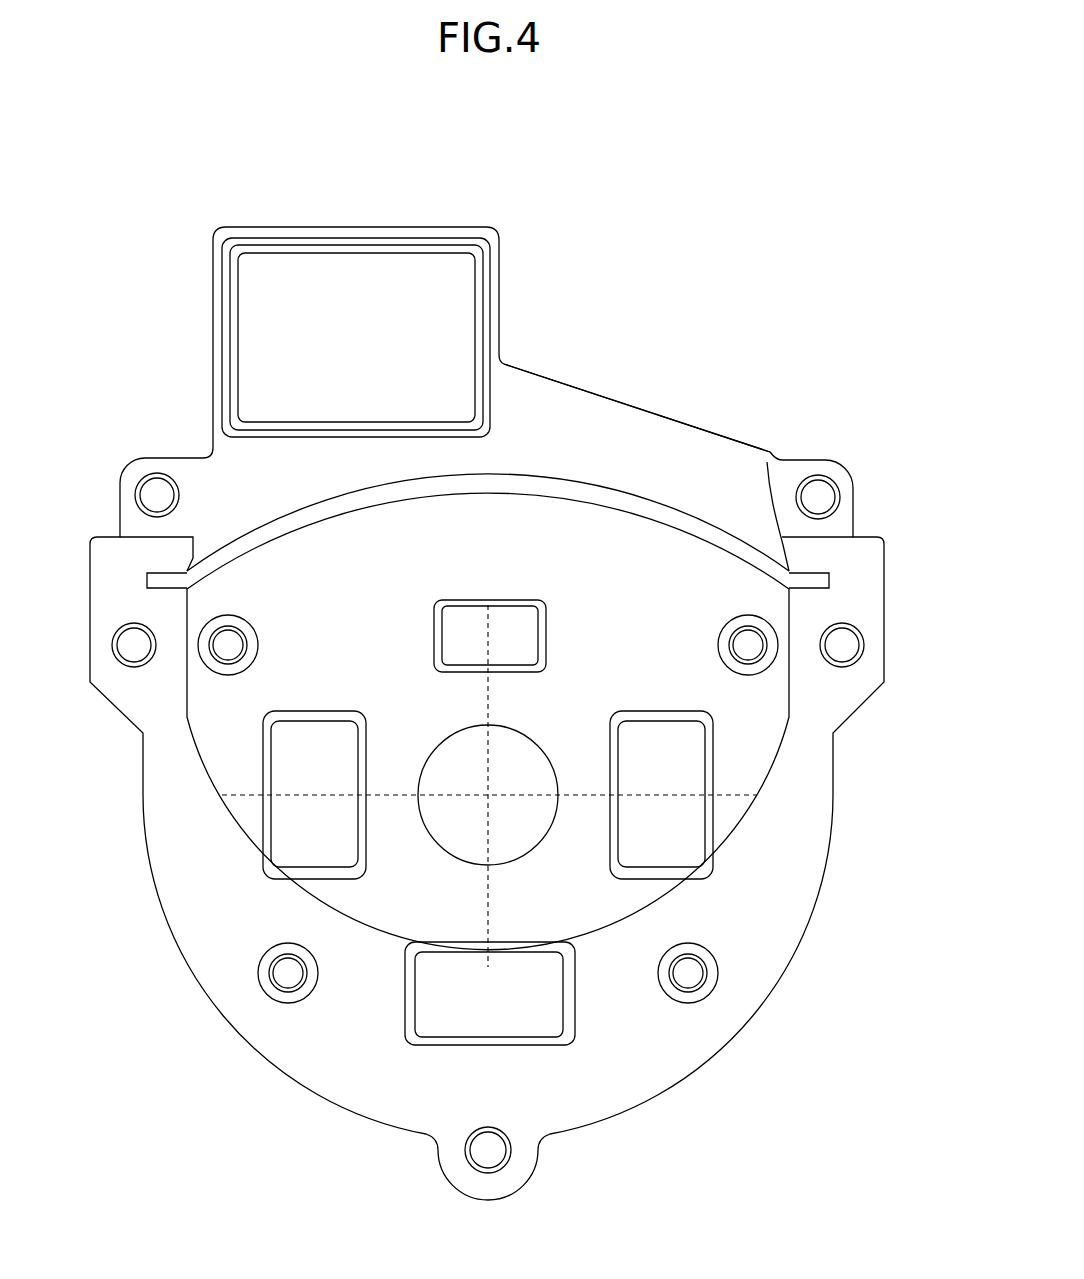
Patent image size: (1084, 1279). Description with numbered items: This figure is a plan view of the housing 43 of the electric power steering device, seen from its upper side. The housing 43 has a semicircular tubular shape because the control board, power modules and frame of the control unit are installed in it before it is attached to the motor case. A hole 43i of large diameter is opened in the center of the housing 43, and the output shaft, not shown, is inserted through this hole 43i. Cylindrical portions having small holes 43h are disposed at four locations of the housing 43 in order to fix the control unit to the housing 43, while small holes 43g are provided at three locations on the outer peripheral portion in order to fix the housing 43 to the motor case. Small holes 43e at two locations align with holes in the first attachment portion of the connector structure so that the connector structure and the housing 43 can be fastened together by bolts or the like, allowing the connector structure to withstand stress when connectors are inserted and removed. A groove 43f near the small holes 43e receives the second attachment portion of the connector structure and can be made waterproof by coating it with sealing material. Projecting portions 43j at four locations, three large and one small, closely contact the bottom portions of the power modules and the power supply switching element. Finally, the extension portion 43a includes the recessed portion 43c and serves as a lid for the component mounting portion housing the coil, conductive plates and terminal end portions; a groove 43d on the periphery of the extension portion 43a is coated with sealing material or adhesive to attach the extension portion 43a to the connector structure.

The housing 43 is at (762, 1008).
The extension portion 43a is at (500, 362).
The recessed portion 43c is at (248, 360).
The groove 43d is at (330, 237).
The small holes 43e is at (828, 477).
The groove 43f is at (805, 572).
The small holes 43g is at (127, 668).
The small holes 43h is at (282, 1002).
The hole 43i is at (475, 862).
The projecting portions 43j is at (712, 848).